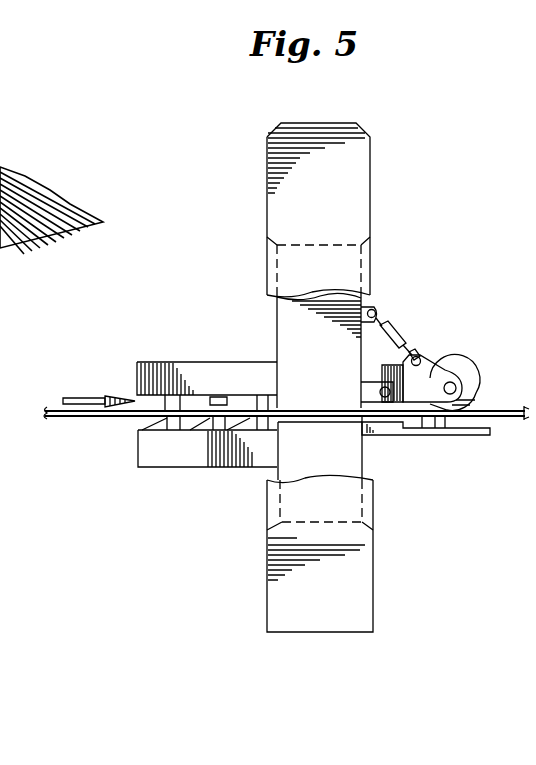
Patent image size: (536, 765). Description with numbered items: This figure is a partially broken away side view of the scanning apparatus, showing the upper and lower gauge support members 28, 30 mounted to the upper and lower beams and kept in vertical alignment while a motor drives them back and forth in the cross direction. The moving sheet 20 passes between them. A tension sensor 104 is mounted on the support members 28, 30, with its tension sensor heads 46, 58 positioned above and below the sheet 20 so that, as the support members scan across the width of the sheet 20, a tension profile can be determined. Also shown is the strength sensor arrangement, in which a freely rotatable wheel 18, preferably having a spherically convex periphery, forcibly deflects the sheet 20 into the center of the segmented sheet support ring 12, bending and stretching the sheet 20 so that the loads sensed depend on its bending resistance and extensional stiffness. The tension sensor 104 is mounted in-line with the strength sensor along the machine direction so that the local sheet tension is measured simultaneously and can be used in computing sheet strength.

The sheet support ring 12 is at (478, 420).
The freely rotatable wheel 18 is at (450, 366).
The sheet 20 is at (95, 417).
The gauge support member 28 is at (277, 312).
The gauge support member 30 is at (352, 462).
The tension sensor head 46 is at (171, 370).
The tension sensor head 58 is at (193, 458).
The tension sensor 104 is at (212, 333).